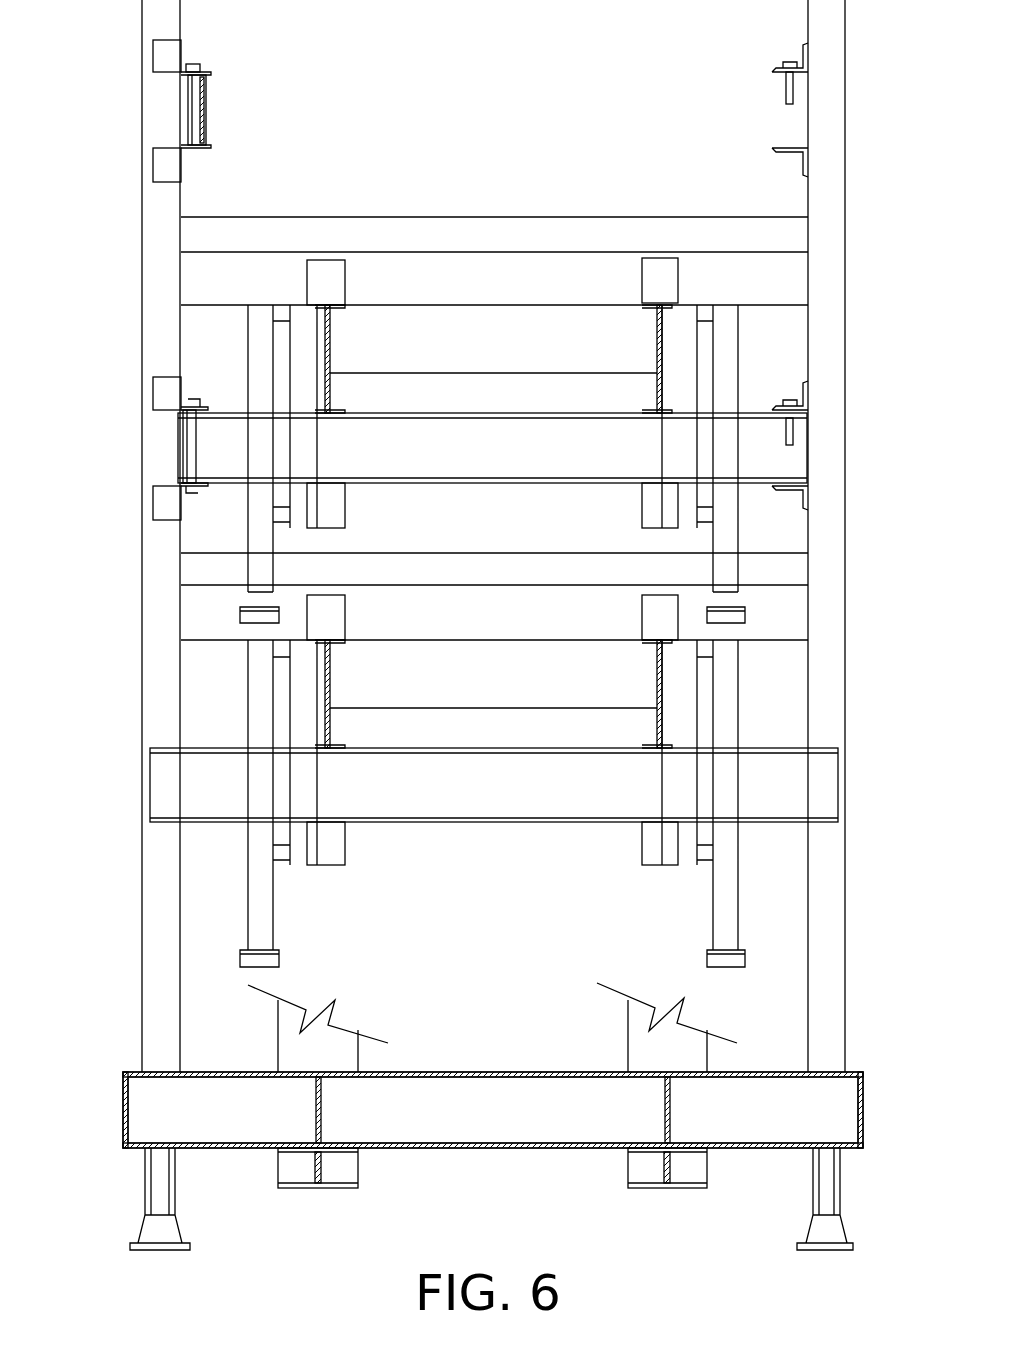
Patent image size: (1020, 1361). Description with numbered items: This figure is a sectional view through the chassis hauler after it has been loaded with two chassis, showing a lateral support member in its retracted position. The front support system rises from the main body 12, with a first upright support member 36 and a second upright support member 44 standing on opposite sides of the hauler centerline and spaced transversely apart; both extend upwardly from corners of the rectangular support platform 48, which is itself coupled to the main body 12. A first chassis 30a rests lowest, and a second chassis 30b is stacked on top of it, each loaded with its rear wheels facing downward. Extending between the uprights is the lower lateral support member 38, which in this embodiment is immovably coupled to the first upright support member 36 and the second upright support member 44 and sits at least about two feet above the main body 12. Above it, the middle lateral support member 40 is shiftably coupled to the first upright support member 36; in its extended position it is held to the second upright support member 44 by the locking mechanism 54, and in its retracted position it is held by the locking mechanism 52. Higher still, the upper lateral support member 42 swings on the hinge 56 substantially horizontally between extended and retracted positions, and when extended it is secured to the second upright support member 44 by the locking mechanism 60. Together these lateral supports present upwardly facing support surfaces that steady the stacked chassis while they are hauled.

The main body 12 is at (338, 1037).
The first chassis 30a is at (208, 662).
The second chassis 30b is at (208, 327).
The first upright support member 36 is at (158, 243).
The lower lateral support member 38 is at (775, 778).
The middle lateral support member 40 is at (738, 445).
The upper lateral support member 42 is at (214, 110).
The second upright support member 44 is at (830, 243).
The support platform 48 is at (490, 1072).
The locking mechanism 52 is at (167, 392).
The locking mechanism 54 is at (805, 400).
The hinge 56 is at (170, 52).
The locking mechanism 60 is at (805, 60).